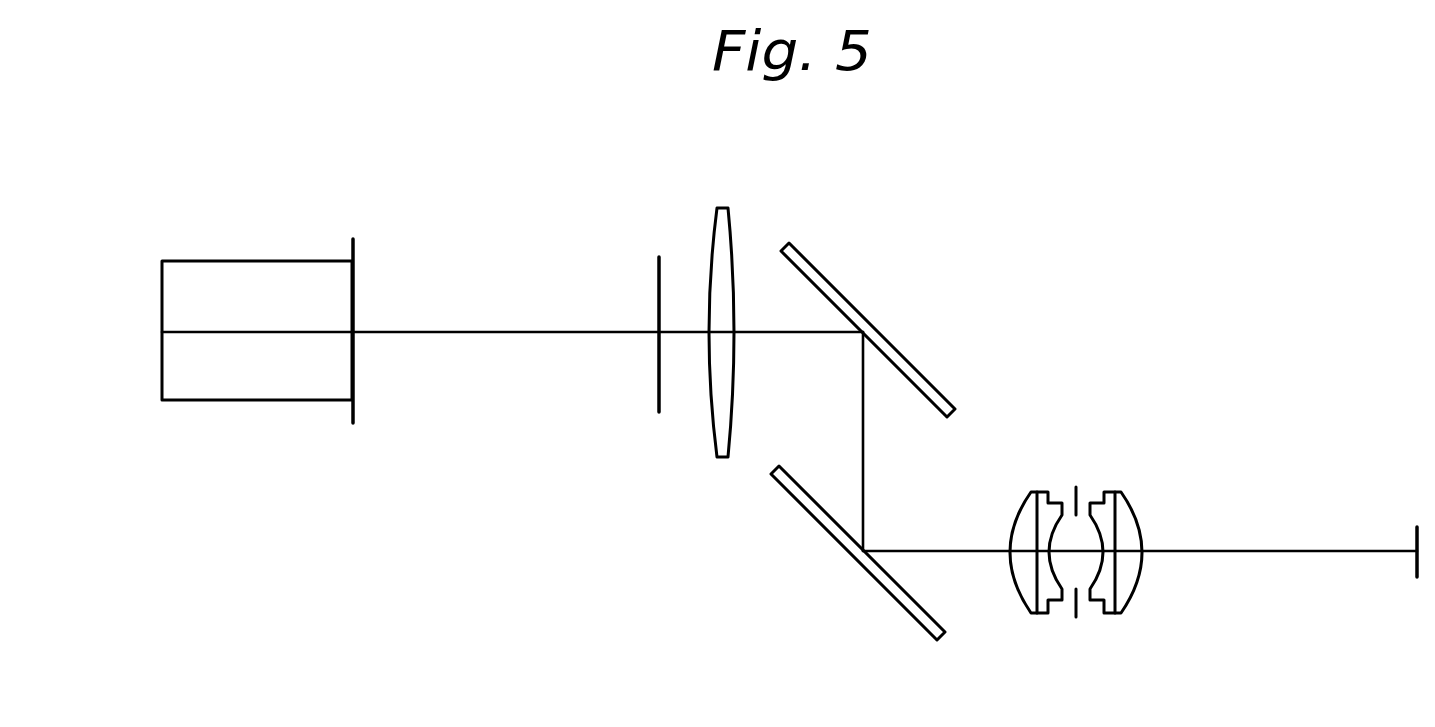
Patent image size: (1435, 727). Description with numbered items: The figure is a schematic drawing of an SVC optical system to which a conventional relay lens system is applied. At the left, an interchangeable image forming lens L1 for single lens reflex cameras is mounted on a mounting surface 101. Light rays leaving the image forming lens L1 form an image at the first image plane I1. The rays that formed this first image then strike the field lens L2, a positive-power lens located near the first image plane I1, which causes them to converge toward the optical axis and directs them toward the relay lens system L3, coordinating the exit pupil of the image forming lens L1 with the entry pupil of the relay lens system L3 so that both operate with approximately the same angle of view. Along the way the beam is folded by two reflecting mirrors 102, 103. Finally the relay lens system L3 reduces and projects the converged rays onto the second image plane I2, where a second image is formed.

The interchangeable lens L1 is at (234, 261).
The mounting surface 101 is at (356, 245).
The first image plane I1 is at (657, 285).
The field lens L2 is at (734, 232).
The reflecting mirror 102 is at (826, 276).
The reflecting mirror 103 is at (795, 506).
The relay lens system L3 is at (1076, 529).
The second image plane I2 is at (1415, 533).